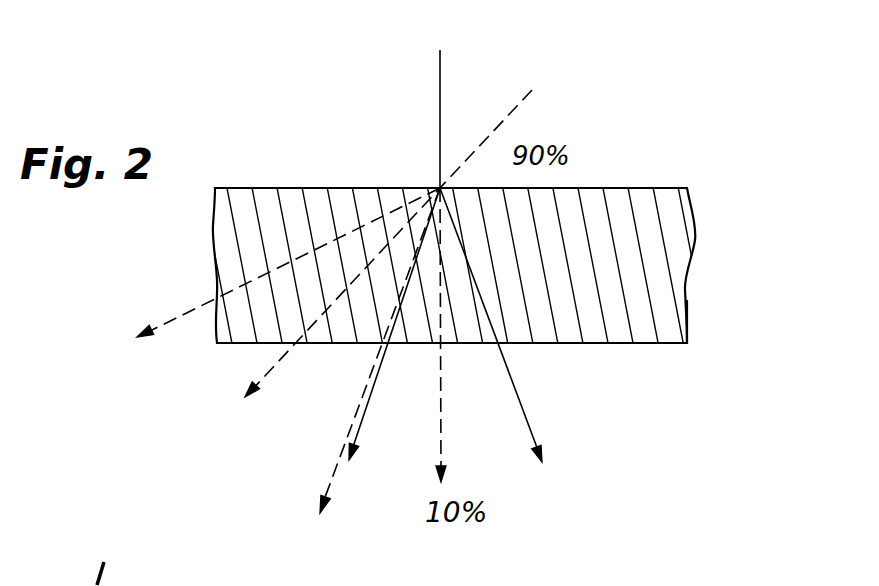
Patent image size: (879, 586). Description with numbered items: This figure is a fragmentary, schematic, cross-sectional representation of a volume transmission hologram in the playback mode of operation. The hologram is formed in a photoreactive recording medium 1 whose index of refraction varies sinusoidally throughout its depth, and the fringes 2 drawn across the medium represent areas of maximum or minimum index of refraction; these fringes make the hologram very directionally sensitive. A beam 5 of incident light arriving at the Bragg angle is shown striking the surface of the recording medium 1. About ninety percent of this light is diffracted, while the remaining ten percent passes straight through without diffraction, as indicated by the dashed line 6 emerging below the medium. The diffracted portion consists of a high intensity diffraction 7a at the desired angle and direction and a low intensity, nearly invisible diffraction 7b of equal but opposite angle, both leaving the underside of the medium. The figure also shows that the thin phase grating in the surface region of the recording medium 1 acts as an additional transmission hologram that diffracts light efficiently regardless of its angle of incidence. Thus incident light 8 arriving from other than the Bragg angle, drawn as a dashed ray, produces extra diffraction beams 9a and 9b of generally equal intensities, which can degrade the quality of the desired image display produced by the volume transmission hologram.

The photoreactive recording medium 1 is at (697, 237).
The fringes 2 is at (662, 317).
The incident light beam 5 is at (438, 95).
The dashed line 6 is at (443, 408).
The high intensity diffraction 7a is at (370, 408).
The low intensity diffraction 7b is at (527, 407).
The incident light 8 is at (518, 103).
The extra diffraction beam 9a is at (340, 458).
The extra diffraction beam 9b is at (288, 262).